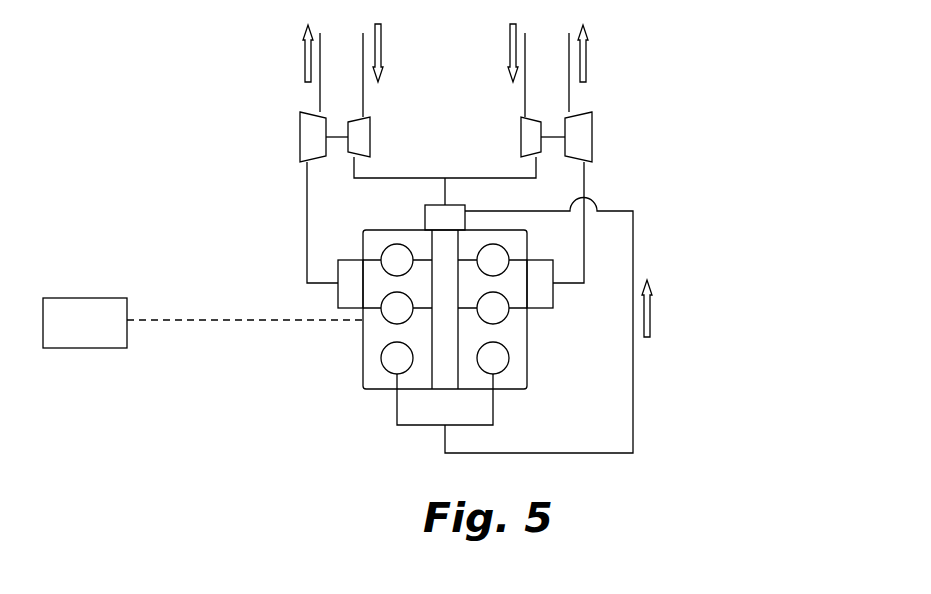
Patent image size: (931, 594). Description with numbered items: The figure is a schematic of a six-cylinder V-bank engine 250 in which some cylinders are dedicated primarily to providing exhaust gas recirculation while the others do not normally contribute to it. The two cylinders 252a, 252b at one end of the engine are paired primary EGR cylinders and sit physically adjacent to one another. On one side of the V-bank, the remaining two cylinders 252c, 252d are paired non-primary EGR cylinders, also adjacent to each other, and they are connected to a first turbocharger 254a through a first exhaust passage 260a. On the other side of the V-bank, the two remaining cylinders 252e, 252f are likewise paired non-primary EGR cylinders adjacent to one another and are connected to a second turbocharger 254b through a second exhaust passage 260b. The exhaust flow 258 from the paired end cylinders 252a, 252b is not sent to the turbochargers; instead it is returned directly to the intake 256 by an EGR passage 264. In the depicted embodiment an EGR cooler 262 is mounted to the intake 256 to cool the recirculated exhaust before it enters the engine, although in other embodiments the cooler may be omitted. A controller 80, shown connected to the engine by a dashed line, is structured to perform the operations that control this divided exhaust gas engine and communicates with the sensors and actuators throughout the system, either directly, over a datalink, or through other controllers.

The controller 80 is at (203, 323).
The six-cylinder V-bank engine 250 is at (745, 193).
The cylinder 252a is at (386, 371).
The cylinder 252b is at (507, 349).
The cylinder 252c is at (382, 320).
The cylinder 252d is at (382, 240).
The cylinder 252e is at (512, 326).
The cylinder 252f is at (483, 240).
The first turbocharger 254a is at (300, 132).
The second turbocharger 254b is at (598, 132).
The intake 256 is at (431, 240).
The exhaust flow 258 is at (652, 313).
The first exhaust passage 260a is at (307, 247).
The second exhaust passage 260b is at (584, 246).
The EGR cooler 262 is at (432, 204).
The EGR passage 264 is at (633, 398).